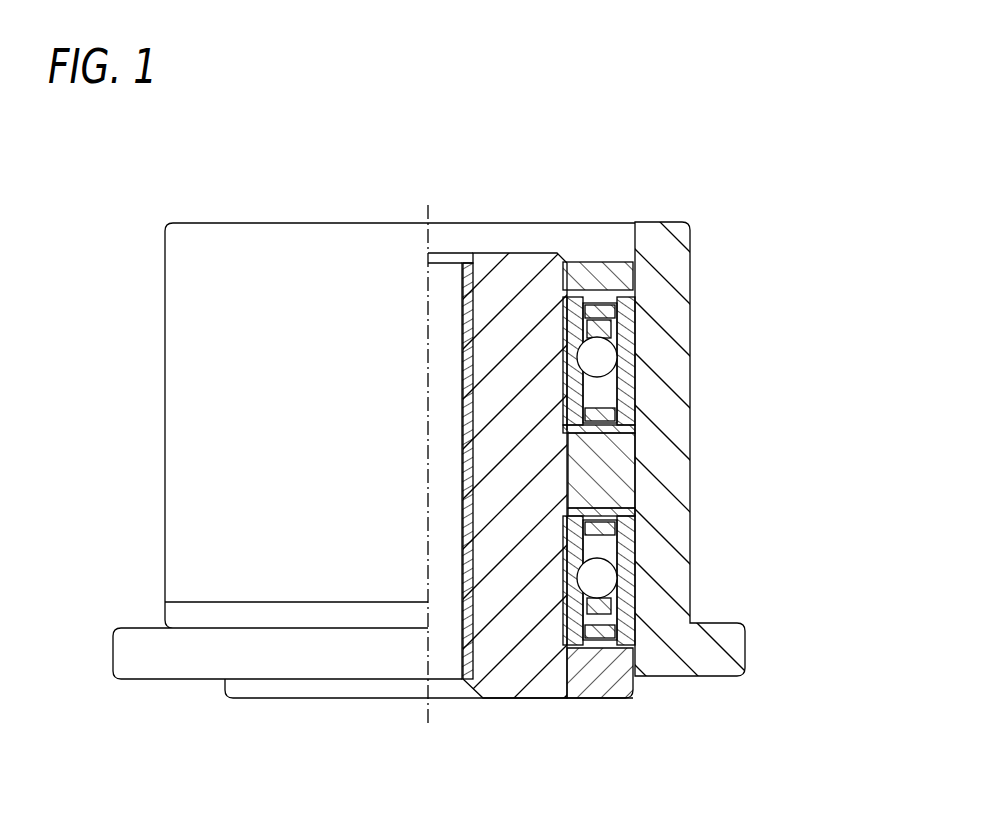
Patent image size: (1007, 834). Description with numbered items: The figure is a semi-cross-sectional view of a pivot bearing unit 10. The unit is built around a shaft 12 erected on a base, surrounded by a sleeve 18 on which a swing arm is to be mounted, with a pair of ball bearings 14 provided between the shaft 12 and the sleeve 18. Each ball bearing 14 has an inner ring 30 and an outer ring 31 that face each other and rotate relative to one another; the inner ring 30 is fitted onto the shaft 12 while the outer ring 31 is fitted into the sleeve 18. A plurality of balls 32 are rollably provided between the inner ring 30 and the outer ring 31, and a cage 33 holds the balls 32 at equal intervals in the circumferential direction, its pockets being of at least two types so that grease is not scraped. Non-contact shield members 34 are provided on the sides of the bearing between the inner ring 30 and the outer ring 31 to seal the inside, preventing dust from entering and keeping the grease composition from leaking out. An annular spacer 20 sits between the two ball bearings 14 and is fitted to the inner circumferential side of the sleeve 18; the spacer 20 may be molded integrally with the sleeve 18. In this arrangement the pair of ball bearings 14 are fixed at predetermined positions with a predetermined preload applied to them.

The pivot bearing unit 10 is at (524, 415).
The shaft 12 is at (520, 252).
The ball bearing 14 is at (708, 506).
The sleeve 18 is at (667, 222).
The spacer 20 is at (634, 470).
The inner ring 30 is at (563, 402).
The outer ring 31 is at (634, 397).
The ball 32 is at (634, 362).
The cage 33 is at (628, 298).
The non-contact shield member 34 is at (596, 262).